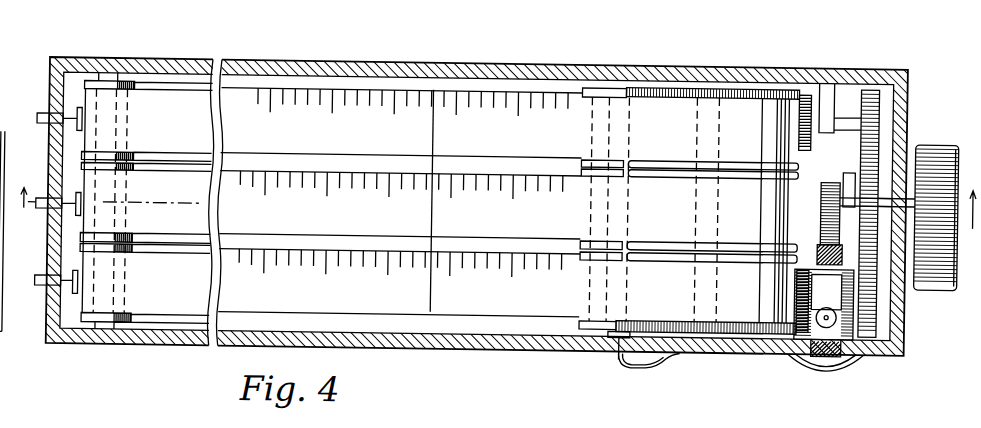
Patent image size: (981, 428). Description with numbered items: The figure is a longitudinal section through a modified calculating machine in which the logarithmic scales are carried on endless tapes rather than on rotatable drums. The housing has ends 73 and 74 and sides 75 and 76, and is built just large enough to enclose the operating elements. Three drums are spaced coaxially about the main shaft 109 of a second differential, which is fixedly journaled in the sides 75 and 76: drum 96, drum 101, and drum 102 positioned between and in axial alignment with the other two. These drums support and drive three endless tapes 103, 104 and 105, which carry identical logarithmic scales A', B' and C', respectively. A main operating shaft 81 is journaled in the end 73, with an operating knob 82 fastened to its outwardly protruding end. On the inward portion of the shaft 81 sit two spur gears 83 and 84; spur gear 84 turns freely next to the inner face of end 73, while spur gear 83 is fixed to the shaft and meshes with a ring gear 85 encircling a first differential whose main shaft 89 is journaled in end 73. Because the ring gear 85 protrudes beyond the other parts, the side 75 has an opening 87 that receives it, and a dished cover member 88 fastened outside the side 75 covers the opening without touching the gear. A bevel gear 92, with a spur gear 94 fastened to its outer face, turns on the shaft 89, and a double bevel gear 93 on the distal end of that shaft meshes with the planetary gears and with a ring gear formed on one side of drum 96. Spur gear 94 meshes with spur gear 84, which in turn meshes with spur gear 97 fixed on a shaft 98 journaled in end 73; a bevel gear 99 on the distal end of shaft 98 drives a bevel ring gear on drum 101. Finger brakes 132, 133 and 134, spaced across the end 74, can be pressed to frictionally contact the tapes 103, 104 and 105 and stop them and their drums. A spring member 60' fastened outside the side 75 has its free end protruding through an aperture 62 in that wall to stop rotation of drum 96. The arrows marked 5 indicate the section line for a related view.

The side 75 is at (535, 343).
The end 74 is at (50, 303).
The end 73 is at (904, 340).
The finger brake 134 is at (44, 122).
The finger brake 133 is at (43, 195).
The finger brake 132 is at (42, 278).
The direction arrow 5 is at (492, 212).
The endless tape 105 is at (167, 84).
The endless tape 104 is at (160, 162).
The endless tape 103 is at (160, 246).
The logarithmic scale C' is at (402, 92).
The logarithmic scale B' is at (400, 205).
The logarithmic scale A' is at (399, 229).
The side 76 is at (577, 76).
The main shaft of second differential 109 is at (713, 76).
The drum 101 is at (747, 92).
The double bevel gear 93 is at (800, 307).
The drum 102 is at (666, 236).
The drum 96 is at (732, 306).
The aperture 62 is at (617, 346).
The spring member 60' is at (649, 373).
The shaft 98 is at (842, 100).
The bevel gear 99 is at (812, 128).
The spur gear 97 is at (872, 80).
The spur gear 84 is at (870, 155).
The main operating shaft 81 is at (847, 191).
The spur gear 83 is at (823, 201).
The ring gear 85 is at (818, 244).
The opening 87 is at (815, 344).
The bevel gear 92 is at (850, 345).
The dished cover member 88 is at (830, 362).
The main shaft of first differential 89 is at (884, 285).
The spur gear 94 is at (875, 322).
The operating knob 82 is at (952, 274).